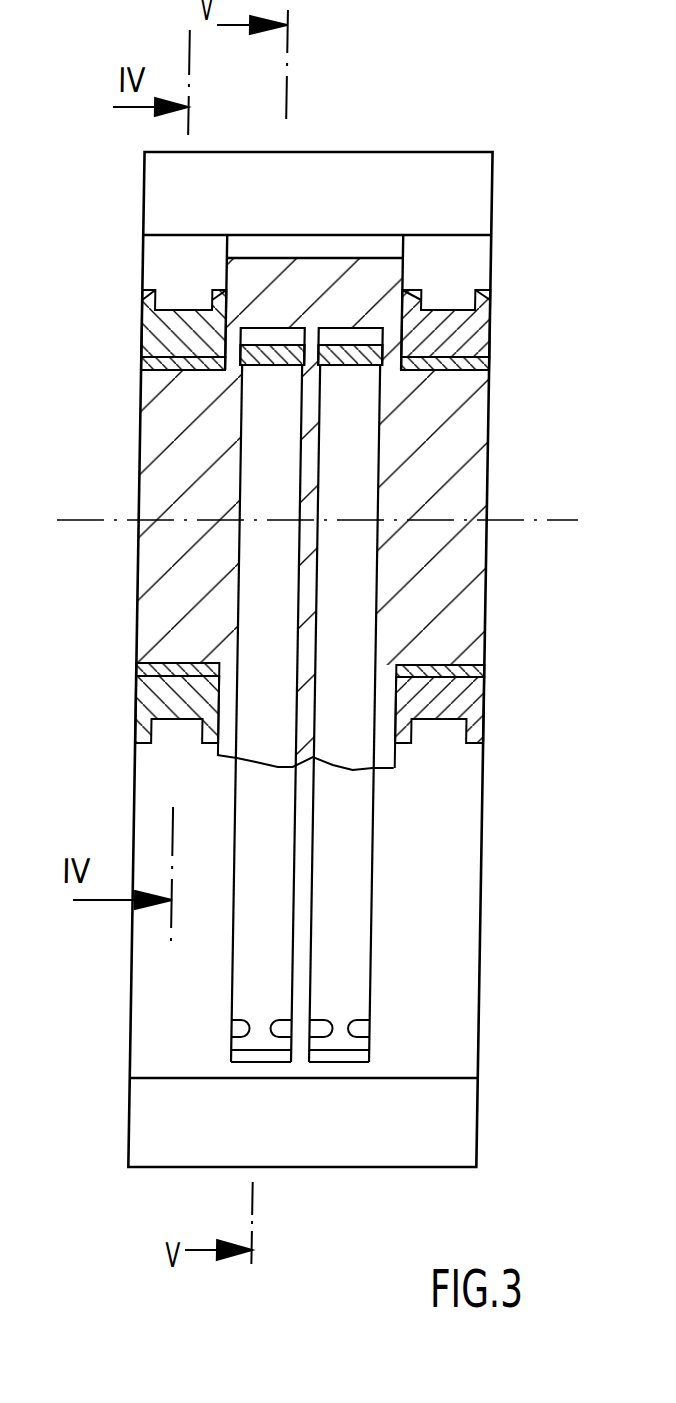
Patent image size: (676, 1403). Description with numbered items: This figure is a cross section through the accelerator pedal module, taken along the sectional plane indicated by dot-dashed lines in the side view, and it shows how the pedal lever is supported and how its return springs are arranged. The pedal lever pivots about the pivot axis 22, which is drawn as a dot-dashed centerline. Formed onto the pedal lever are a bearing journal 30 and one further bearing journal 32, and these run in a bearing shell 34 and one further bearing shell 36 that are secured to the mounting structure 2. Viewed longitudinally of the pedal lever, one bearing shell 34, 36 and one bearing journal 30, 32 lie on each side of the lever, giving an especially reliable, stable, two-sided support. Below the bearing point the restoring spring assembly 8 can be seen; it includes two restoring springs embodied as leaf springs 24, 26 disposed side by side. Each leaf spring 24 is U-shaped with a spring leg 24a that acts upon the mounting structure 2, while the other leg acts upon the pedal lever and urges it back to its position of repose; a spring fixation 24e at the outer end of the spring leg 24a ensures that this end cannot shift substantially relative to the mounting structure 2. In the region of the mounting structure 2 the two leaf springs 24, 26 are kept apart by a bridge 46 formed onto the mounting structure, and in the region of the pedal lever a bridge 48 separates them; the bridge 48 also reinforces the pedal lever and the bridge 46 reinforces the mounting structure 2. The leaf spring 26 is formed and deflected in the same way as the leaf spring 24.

The mounting structure 2 is at (480, 1057).
The restoring spring assembly 8 is at (416, 886).
The pivot axis 22 is at (565, 518).
The leaf spring 24 is at (278, 347).
The spring leg 24a is at (269, 990).
The spring fixation 24e is at (249, 1027).
The leaf spring 26 is at (358, 350).
The bearing journal 30 is at (166, 468).
The bearing journal 32 is at (475, 487).
The bearing shell 34 is at (174, 690).
The bearing shell 36 is at (478, 702).
The bridge 46 is at (315, 960).
The bridge 48 is at (315, 602).